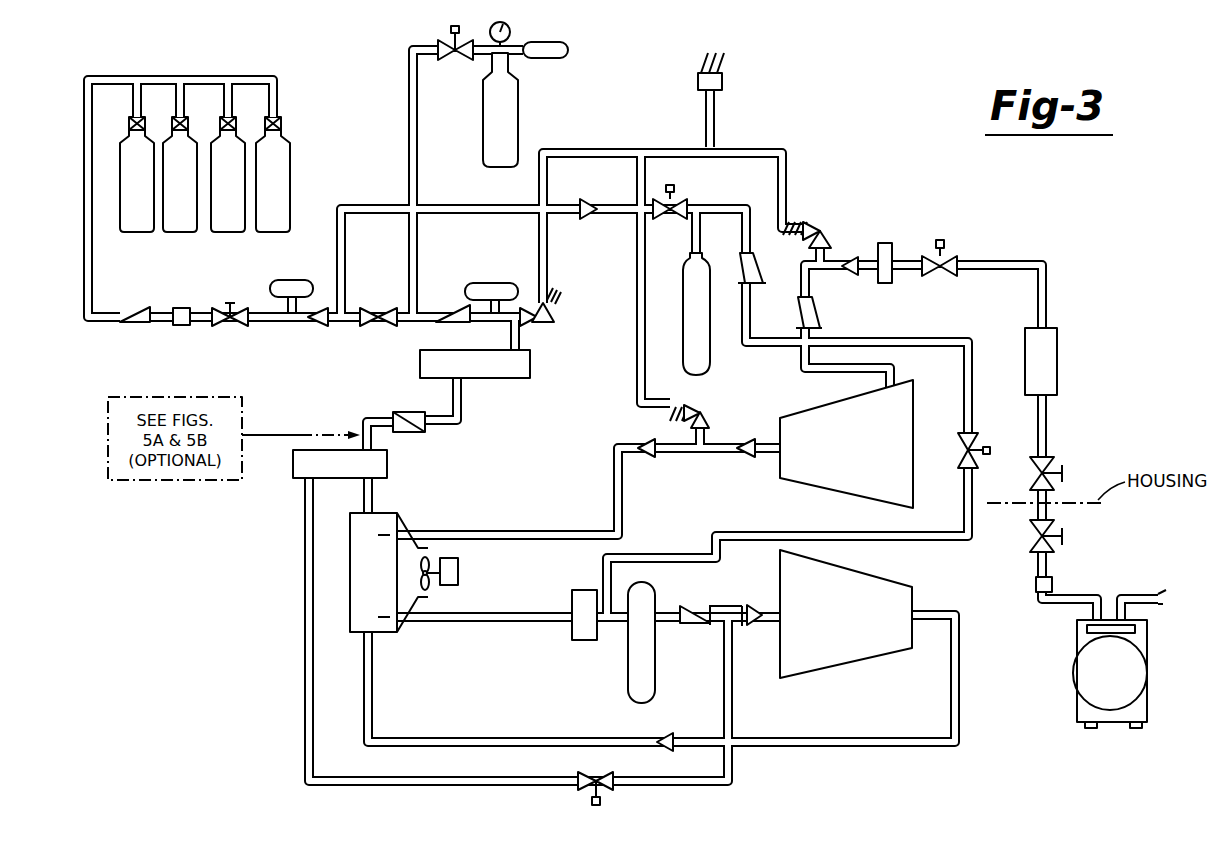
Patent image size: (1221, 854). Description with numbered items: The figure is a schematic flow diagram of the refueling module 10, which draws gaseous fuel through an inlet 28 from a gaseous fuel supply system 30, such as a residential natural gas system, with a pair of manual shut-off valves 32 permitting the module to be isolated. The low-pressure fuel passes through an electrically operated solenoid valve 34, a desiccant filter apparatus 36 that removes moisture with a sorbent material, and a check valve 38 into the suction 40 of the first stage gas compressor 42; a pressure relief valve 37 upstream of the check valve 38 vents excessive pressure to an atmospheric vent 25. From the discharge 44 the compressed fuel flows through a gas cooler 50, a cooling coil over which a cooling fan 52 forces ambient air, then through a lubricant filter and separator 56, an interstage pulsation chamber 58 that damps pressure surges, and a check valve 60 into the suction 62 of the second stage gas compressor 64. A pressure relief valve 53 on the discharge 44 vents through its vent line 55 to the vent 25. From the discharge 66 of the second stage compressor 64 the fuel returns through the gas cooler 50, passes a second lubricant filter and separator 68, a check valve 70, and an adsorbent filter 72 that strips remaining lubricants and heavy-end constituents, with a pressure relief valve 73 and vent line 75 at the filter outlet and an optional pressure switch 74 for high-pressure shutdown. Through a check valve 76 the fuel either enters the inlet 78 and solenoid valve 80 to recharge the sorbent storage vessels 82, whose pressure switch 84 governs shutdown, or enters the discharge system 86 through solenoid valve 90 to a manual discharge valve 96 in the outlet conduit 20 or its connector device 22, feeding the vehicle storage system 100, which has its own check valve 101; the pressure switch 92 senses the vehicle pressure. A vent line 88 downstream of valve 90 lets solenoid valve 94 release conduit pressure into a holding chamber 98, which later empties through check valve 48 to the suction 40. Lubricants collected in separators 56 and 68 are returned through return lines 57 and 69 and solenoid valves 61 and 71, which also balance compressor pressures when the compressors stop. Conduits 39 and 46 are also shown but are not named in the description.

The refueling module 10 is at (1027, 213).
The outlet conduit 20 is at (200, 323).
The connector device 22 is at (186, 308).
The atmospheric vent 25 is at (723, 80).
The inlet 28 is at (1036, 566).
The gaseous fuel supply system 30 is at (1102, 594).
The manual shut-off valves 32 is at (1056, 466).
The solenoid valve 34 is at (952, 258).
The desiccant filter apparatus 36 is at (893, 250).
The pressure relief valve 37 is at (826, 230).
The check valve 38 is at (821, 322).
The vent line 39 is at (788, 192).
The suction 40 is at (835, 371).
The first stage gas compressor 42 is at (820, 492).
The discharge 44 is at (720, 453).
The bypass line 46 is at (762, 350).
The check valve 48 is at (760, 268).
The gas cooler 50 is at (388, 633).
The cooling fan 52 is at (459, 572).
The pressure relief valve 53 is at (710, 416).
The vent line 55 is at (636, 368).
The lubricant filter and separator 56 is at (586, 641).
The return line 57 is at (666, 555).
The pulsation chamber 58 is at (656, 672).
The check valve 60 is at (695, 608).
The solenoid valve 61 is at (981, 441).
The suction 62 is at (750, 605).
The second stage gas compressor 64 is at (852, 666).
The discharge 66 is at (947, 640).
The second lubricant filter and separator 68 is at (388, 465).
The return line 69 is at (304, 655).
The check valve 70 is at (402, 412).
The solenoid valve 71 is at (603, 801).
The adsorbent filter 72 is at (505, 380).
The pressure relief valve 73 is at (548, 326).
The pressure switch 74 is at (500, 283).
The vent line 75 is at (549, 252).
The check valve 76 is at (452, 306).
The inlet 78 is at (420, 246).
The solenoid valve 80 is at (437, 48).
The sorbent storage vessels 82 is at (519, 120).
The pressure switch 84 is at (569, 50).
The refueling module discharge system 86 is at (380, 324).
The vent line 88 is at (346, 262).
The solenoid valve 90 is at (318, 326).
The pressure switch 92 is at (293, 280).
The solenoid valve 94 is at (676, 200).
The manual discharge valve 96 is at (239, 327).
The holding chamber 98 is at (683, 315).
The vehicle storage system 100 is at (88, 324).
The check valve 101 is at (132, 312).